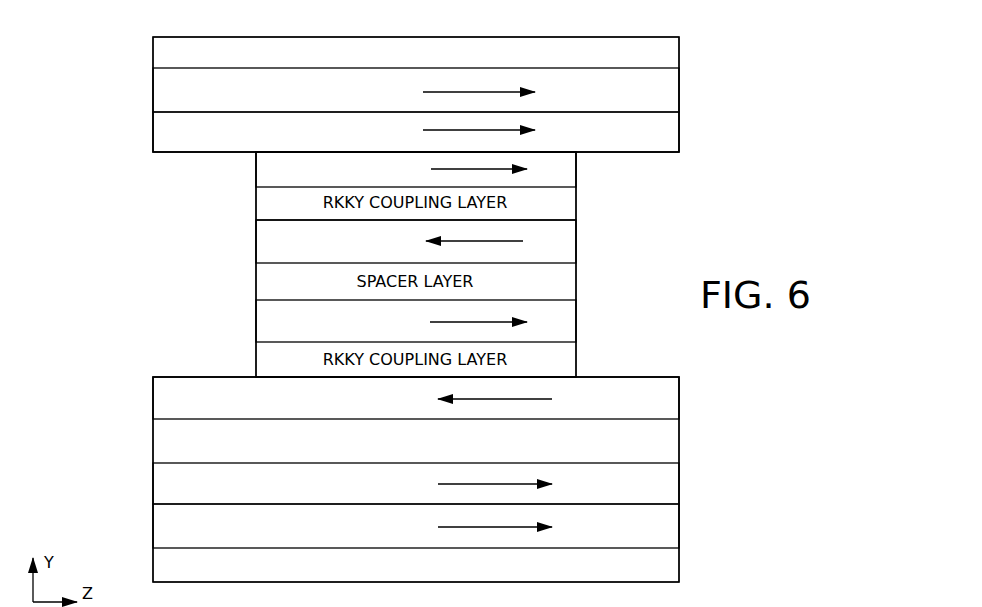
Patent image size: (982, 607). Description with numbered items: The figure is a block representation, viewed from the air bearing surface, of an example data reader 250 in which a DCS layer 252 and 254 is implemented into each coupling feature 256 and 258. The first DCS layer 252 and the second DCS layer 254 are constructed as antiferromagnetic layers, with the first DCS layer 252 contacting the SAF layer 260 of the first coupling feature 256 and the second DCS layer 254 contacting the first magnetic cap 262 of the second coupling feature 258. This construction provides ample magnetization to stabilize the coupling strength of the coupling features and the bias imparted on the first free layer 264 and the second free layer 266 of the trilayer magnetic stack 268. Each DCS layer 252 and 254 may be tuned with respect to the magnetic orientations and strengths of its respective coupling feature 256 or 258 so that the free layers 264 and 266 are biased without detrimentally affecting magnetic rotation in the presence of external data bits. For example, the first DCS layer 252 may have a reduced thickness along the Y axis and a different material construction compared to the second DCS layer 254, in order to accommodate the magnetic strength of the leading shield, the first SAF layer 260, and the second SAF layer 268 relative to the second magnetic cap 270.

The data reader 250 is at (768, 33).
The first DCS layer 252 is at (680, 529).
The second DCS layer 254 is at (680, 91).
The first coupling feature 256 is at (149, 381).
The second coupling feature 258 is at (131, 125).
The SAF layer 260 is at (680, 486).
The first magnetic cap 262 is at (680, 133).
The first free layer 264 is at (577, 324).
The second free layer 266 is at (577, 237).
The trilayer magnetic stack 268 is at (232, 240).
The second magnetic cap 270 is at (577, 170).